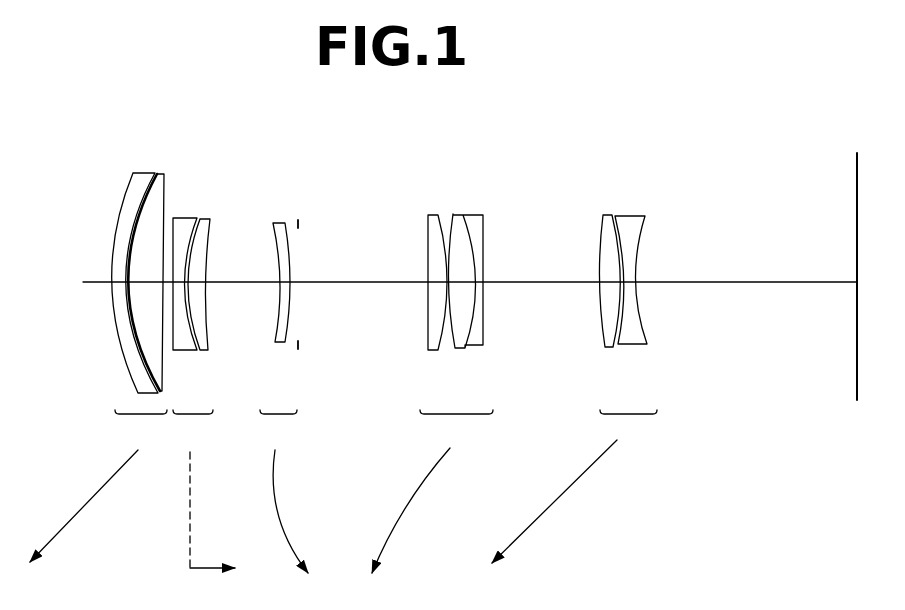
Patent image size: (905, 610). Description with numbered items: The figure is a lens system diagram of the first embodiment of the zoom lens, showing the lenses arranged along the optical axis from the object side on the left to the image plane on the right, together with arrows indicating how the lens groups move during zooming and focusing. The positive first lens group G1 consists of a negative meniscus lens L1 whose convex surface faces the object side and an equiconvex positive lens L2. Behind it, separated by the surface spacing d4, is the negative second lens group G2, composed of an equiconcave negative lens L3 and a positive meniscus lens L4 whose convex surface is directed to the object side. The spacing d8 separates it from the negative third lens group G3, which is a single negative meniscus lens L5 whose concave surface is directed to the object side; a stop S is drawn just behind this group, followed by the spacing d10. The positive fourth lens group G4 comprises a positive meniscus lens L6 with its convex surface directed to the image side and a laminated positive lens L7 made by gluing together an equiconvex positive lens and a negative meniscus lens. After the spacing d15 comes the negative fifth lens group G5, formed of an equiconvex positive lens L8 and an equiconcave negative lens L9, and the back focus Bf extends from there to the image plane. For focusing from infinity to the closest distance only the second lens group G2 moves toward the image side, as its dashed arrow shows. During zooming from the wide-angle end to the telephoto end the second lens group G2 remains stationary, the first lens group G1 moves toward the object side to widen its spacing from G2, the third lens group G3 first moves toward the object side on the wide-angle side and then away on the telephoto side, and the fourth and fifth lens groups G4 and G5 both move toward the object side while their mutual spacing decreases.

The negative meniscus lens L1 is at (143, 172).
The equiconvex positive lens L2 is at (165, 175).
The equiconcave negative lens L3 is at (185, 217).
The positive meniscus lens L4 is at (200, 217).
The negative meniscus lens L5 is at (275, 222).
The aperture stop S is at (298, 221).
The positive meniscus lens L6 is at (432, 213).
The laminated positive lens L7 is at (462, 215).
The equiconvex positive lens L8 is at (607, 214).
The equiconcave negative lens L9 is at (635, 216).
The lens surface spacing d4 is at (170, 353).
The lens surface spacing d8 is at (227, 284).
The lens surface spacing d10 is at (353, 284).
The lens surface spacing d15 is at (543, 283).
The back focus Bf is at (757, 283).
The first lens group G1 is at (98, 486).
The second lens group G2 is at (217, 508).
The third lens group G3 is at (284, 491).
The fourth lens group G4 is at (432, 491).
The fifth lens group G5 is at (574, 486).